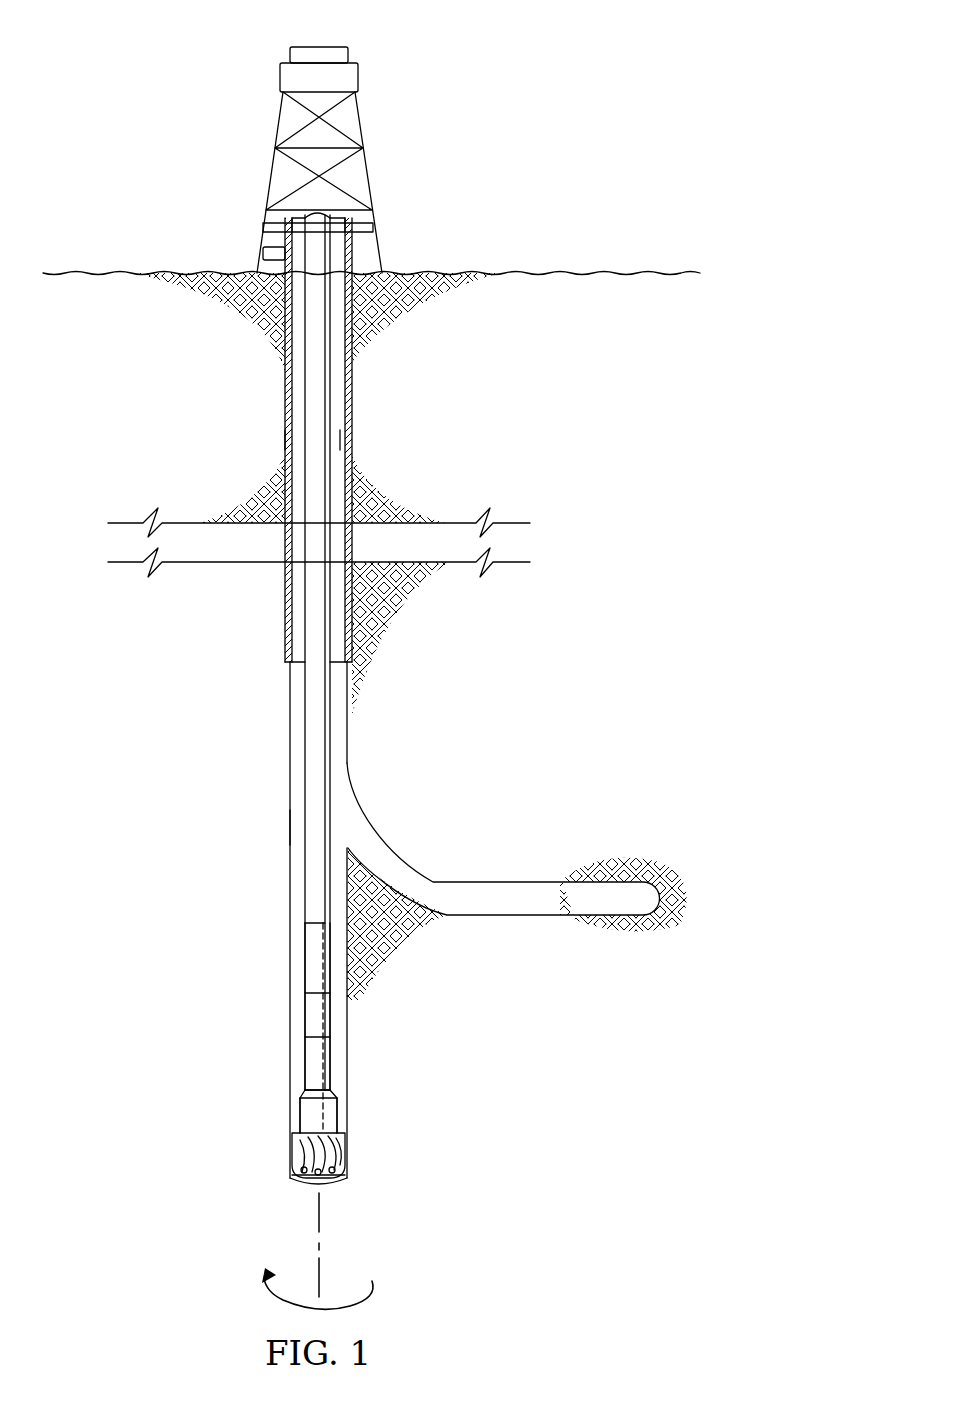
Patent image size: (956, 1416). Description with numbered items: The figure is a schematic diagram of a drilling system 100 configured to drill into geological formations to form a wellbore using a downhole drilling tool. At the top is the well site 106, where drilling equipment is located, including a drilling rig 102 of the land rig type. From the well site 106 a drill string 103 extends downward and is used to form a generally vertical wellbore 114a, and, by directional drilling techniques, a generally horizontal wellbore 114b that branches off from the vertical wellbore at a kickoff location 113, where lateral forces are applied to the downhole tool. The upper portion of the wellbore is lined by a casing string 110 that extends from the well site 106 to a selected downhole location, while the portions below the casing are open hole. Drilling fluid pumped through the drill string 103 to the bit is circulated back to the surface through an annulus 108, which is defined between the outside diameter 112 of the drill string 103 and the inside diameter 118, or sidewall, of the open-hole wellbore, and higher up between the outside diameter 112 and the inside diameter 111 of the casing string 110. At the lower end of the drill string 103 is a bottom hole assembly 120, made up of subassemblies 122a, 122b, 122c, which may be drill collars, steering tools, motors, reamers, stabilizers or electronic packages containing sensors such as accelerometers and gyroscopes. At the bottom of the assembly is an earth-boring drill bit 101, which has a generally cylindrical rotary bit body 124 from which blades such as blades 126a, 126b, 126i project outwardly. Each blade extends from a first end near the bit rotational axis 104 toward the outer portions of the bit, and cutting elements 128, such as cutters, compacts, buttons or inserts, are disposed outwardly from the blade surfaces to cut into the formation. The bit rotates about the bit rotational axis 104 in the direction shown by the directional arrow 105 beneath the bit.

The drilling system 100 is at (518, 58).
The earth-boring drill bit 101 is at (202, 1150).
The drilling rig 102 is at (214, 97).
The drill string 103 is at (332, 388).
The bit rotational axis 104 is at (322, 1212).
The directional arrow 105 is at (374, 1282).
The well site 106 is at (363, 247).
The annulus 108 is at (296, 393).
The casing string 110 is at (283, 441).
The inside diameter of casing string 111 is at (341, 436).
The outside diameter of drill string 112 is at (300, 602).
The kickoff location 113 is at (345, 766).
The generally vertical wellbore 114a is at (202, 648).
The generally horizontal wellbore 114b is at (521, 867).
The inside diameter of wellbore 118 is at (290, 840).
The bottom hole assembly 120 is at (357, 1037).
The subassembly 122a is at (313, 956).
The subassembly 122b is at (313, 1013).
The subassembly 122c is at (313, 1056).
The rotary bit body 124 is at (299, 1116).
The blade 126a is at (296, 1158).
The blade 126b is at (293, 1150).
The blade 126i is at (347, 1153).
The cutting element 128 is at (348, 1159).